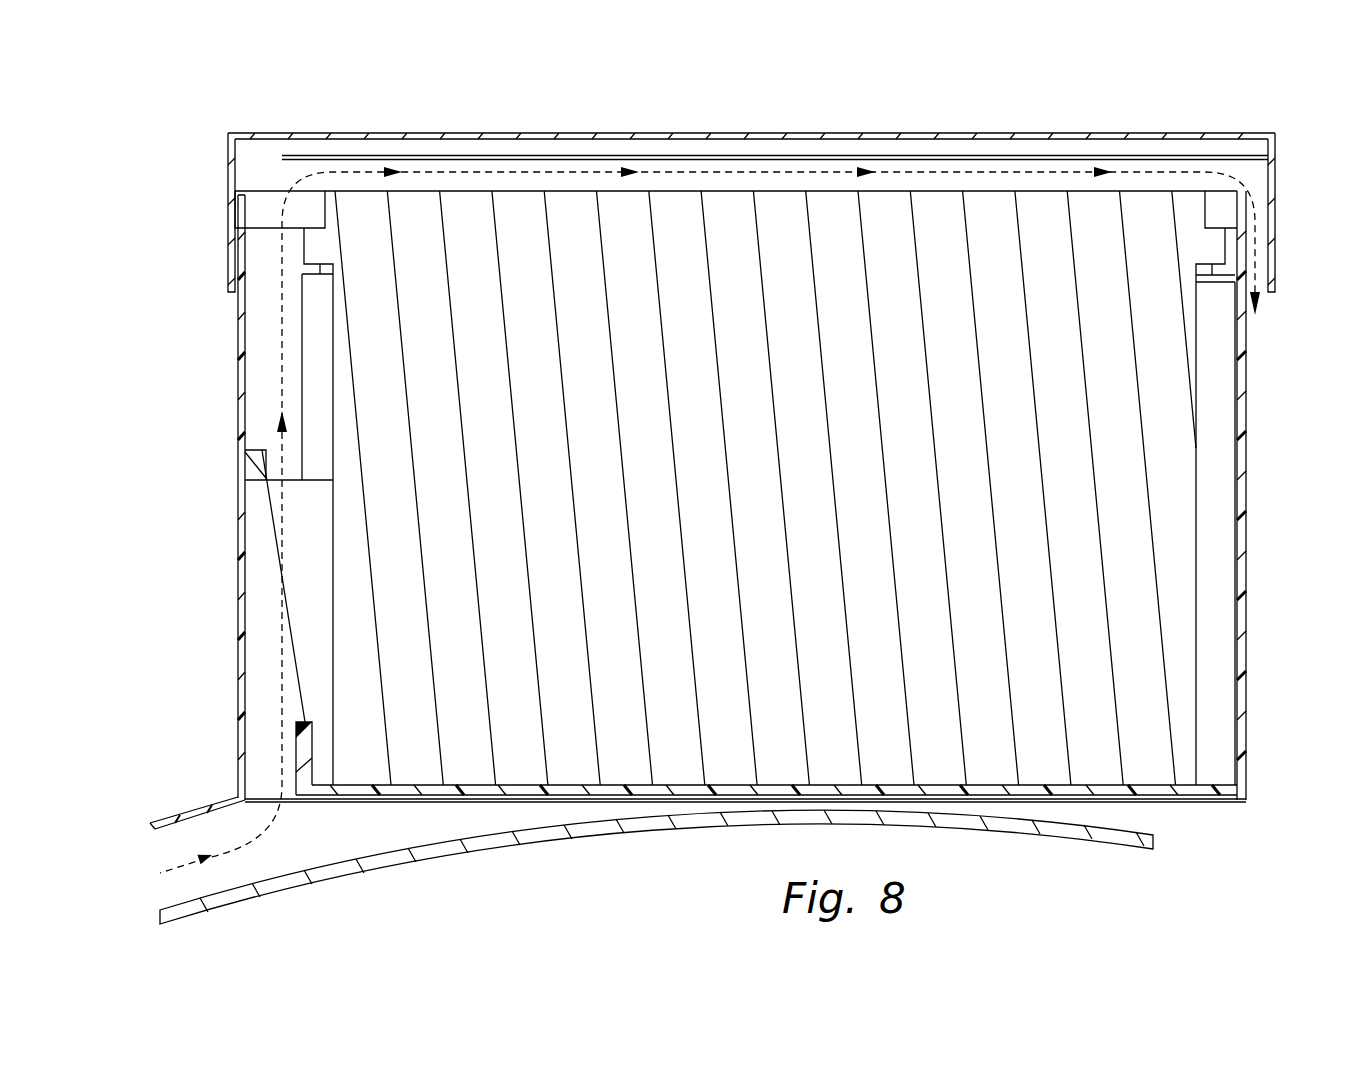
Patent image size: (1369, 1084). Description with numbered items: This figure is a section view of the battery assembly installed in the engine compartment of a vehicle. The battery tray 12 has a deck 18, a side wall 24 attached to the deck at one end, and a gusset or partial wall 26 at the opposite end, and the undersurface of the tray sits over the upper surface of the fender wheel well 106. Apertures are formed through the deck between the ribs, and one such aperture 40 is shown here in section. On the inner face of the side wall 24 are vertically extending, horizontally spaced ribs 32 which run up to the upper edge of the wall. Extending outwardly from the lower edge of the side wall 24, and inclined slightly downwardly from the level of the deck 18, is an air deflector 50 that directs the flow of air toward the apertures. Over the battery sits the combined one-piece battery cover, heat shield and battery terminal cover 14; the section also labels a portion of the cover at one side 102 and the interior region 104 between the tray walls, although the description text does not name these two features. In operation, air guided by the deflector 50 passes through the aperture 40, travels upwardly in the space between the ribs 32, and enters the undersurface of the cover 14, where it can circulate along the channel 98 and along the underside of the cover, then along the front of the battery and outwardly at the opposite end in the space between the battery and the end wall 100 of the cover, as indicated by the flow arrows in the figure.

The battery tray 12 is at (1264, 586).
The combined one-piece battery cover, heat shield and battery terminal cover 14 is at (214, 123).
The deck 18 is at (1140, 778).
The side wall 24 is at (238, 497).
The gusset or partial wall 26 is at (1247, 478).
The ribs 32 is at (296, 638).
The aperture 40 is at (296, 740).
The air deflector 50 is at (163, 818).
The channel 98 is at (478, 143).
The end wall 100 is at (1273, 226).
The left cover side 102 is at (226, 236).
The filter media 104 is at (380, 435).
The fender wheel well 106 is at (280, 858).